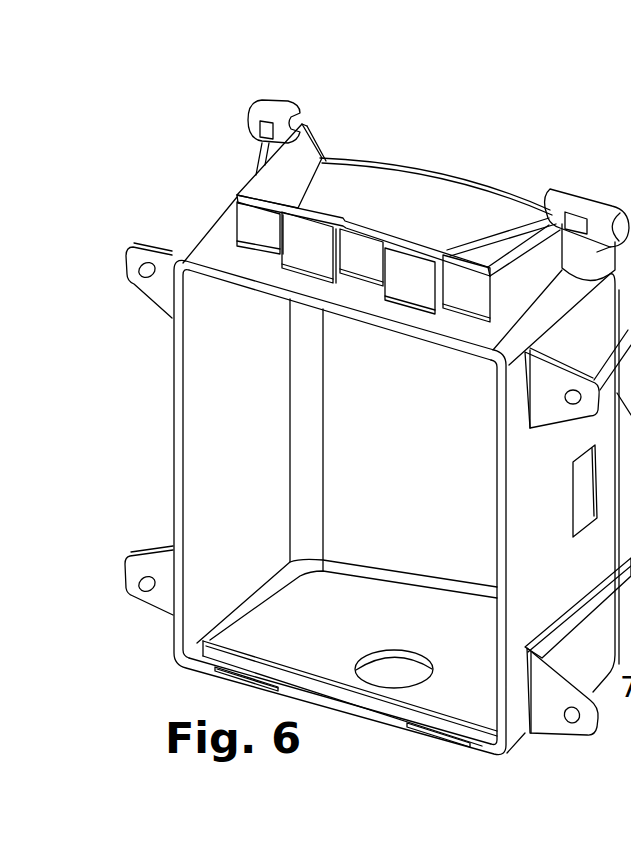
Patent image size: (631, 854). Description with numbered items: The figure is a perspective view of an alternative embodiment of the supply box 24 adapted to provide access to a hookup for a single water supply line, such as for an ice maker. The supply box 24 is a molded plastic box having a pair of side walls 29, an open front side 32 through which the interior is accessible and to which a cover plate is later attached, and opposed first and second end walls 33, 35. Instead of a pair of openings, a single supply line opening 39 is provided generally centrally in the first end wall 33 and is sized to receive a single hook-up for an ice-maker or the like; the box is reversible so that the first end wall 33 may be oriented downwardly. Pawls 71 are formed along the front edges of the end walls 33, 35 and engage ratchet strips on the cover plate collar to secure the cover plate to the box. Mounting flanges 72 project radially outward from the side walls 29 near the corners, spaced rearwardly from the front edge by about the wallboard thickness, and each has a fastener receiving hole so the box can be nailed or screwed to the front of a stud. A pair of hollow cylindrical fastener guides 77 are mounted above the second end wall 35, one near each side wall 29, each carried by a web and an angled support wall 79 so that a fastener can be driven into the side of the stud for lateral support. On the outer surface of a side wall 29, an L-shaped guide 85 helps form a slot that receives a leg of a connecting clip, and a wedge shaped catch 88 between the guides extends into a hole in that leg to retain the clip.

The supply box 24 is at (204, 128).
The side walls 29 is at (251, 468).
The open front side 32 is at (172, 505).
The first end wall 33 is at (470, 698).
The second end wall 35 is at (227, 255).
The single supply line opening 39 is at (386, 688).
The pawls 71 is at (256, 286).
The mounting flanges 72 is at (128, 282).
The fastener guides 77 is at (288, 101).
The support wall 79 is at (303, 160).
The L-shaped guide 85 is at (552, 633).
The wedge shaped catch 88 is at (588, 490).